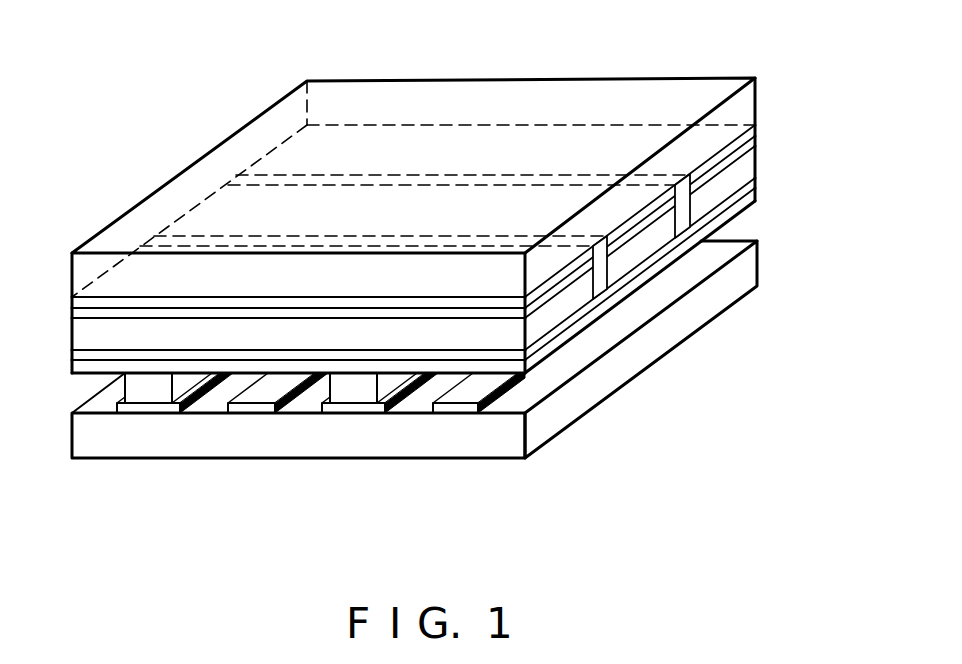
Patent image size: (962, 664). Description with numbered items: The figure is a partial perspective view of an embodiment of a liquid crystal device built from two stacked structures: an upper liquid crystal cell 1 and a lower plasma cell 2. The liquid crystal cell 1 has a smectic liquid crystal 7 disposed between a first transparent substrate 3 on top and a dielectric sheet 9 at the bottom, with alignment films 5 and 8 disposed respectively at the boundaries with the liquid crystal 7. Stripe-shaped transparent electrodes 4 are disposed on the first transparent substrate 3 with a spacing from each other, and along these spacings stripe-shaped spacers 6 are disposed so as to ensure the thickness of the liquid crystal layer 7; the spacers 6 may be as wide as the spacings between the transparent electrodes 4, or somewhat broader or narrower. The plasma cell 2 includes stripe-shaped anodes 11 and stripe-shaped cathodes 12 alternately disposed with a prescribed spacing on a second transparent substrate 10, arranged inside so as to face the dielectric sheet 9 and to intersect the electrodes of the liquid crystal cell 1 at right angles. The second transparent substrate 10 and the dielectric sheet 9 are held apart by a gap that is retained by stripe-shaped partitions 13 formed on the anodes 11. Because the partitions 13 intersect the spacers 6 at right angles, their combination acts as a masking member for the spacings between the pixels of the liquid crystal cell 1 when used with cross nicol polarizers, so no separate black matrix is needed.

The liquid crystal cell 1 is at (67, 257).
The plasma cell 2 is at (67, 380).
The first transparent substrate 3 is at (665, 88).
The transparent electrodes 4 is at (757, 138).
The alignment film 5 is at (747, 170).
The spacers 6 is at (683, 215).
The smectic liquid crystal 7 is at (755, 157).
The alignment film 8 is at (758, 185).
The dielectric sheet 9 is at (758, 198).
The second transparent substrate 10 is at (550, 414).
The anodes 11 is at (158, 410).
The cathodes 12 is at (253, 410).
The partitions 13 is at (352, 388).